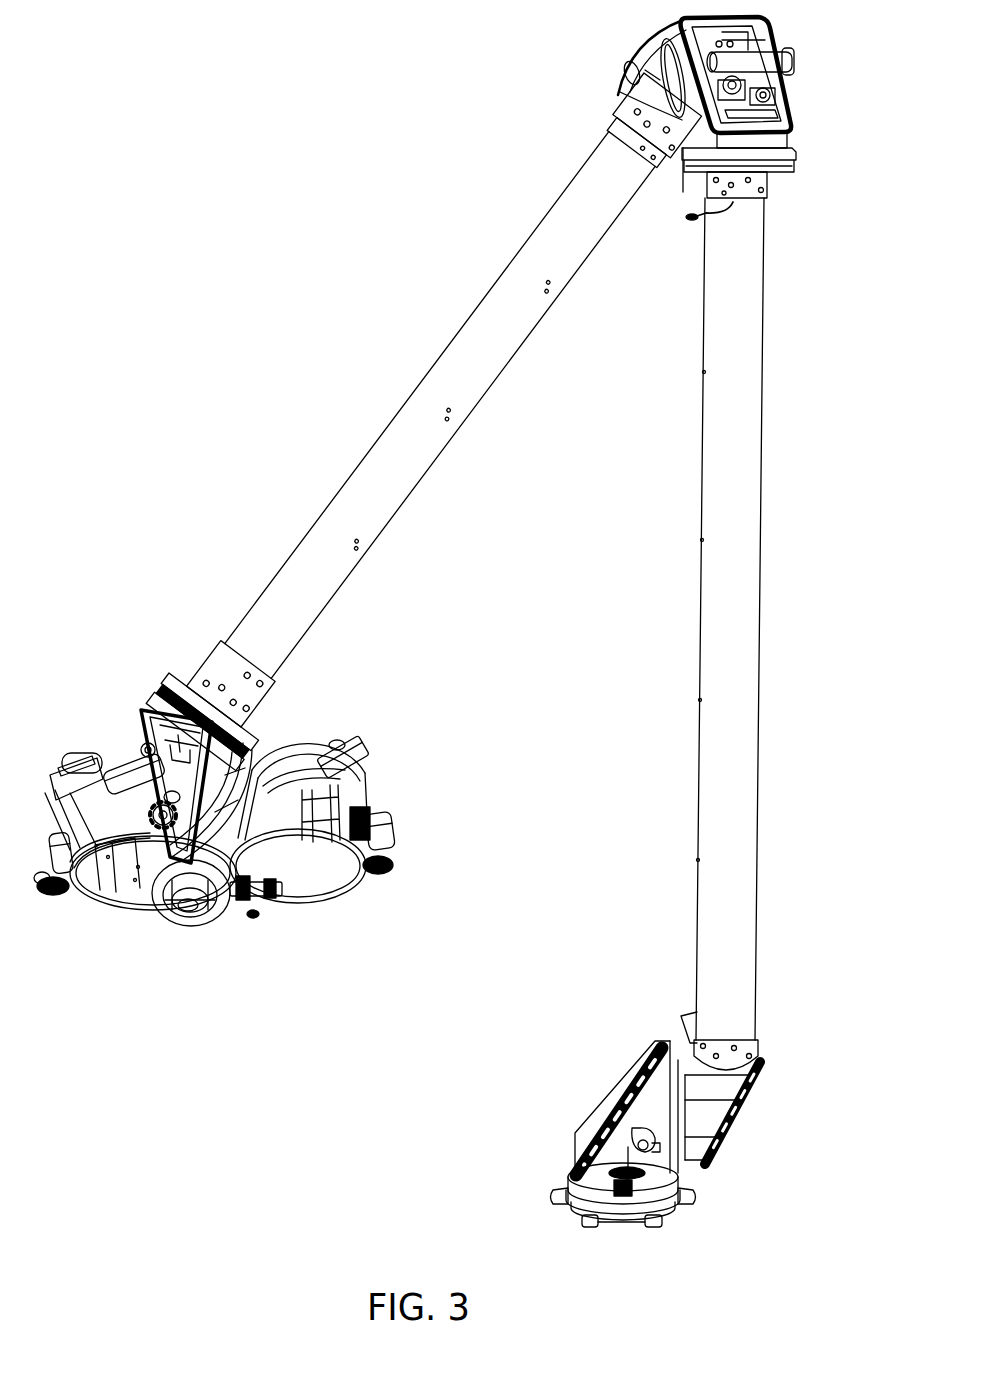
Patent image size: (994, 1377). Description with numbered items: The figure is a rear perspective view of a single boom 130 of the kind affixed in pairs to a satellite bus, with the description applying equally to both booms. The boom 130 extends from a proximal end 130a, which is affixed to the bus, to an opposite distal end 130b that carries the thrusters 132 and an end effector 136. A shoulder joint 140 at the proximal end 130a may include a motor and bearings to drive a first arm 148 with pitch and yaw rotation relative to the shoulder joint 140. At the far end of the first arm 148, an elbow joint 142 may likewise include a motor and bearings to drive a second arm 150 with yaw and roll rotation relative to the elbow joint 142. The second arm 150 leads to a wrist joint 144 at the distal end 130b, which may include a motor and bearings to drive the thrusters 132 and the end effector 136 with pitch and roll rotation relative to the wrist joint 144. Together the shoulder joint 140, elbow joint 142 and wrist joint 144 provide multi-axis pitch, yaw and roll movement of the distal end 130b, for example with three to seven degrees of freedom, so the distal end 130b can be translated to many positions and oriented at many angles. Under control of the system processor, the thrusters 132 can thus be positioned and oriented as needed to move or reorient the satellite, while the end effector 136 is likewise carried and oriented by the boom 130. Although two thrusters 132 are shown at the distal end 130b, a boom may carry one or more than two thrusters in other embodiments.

The boom 130 is at (813, 262).
The proximal end 130a is at (688, 1267).
The distal end 130b is at (178, 657).
The thruster 132 is at (362, 772).
The end effector 136 is at (218, 922).
The shoulder joint 140 is at (657, 1050).
The elbow joint 142 is at (681, 22).
The wrist joint 144 is at (168, 690).
The first arm 148 is at (759, 531).
The second arm 150 is at (446, 378).